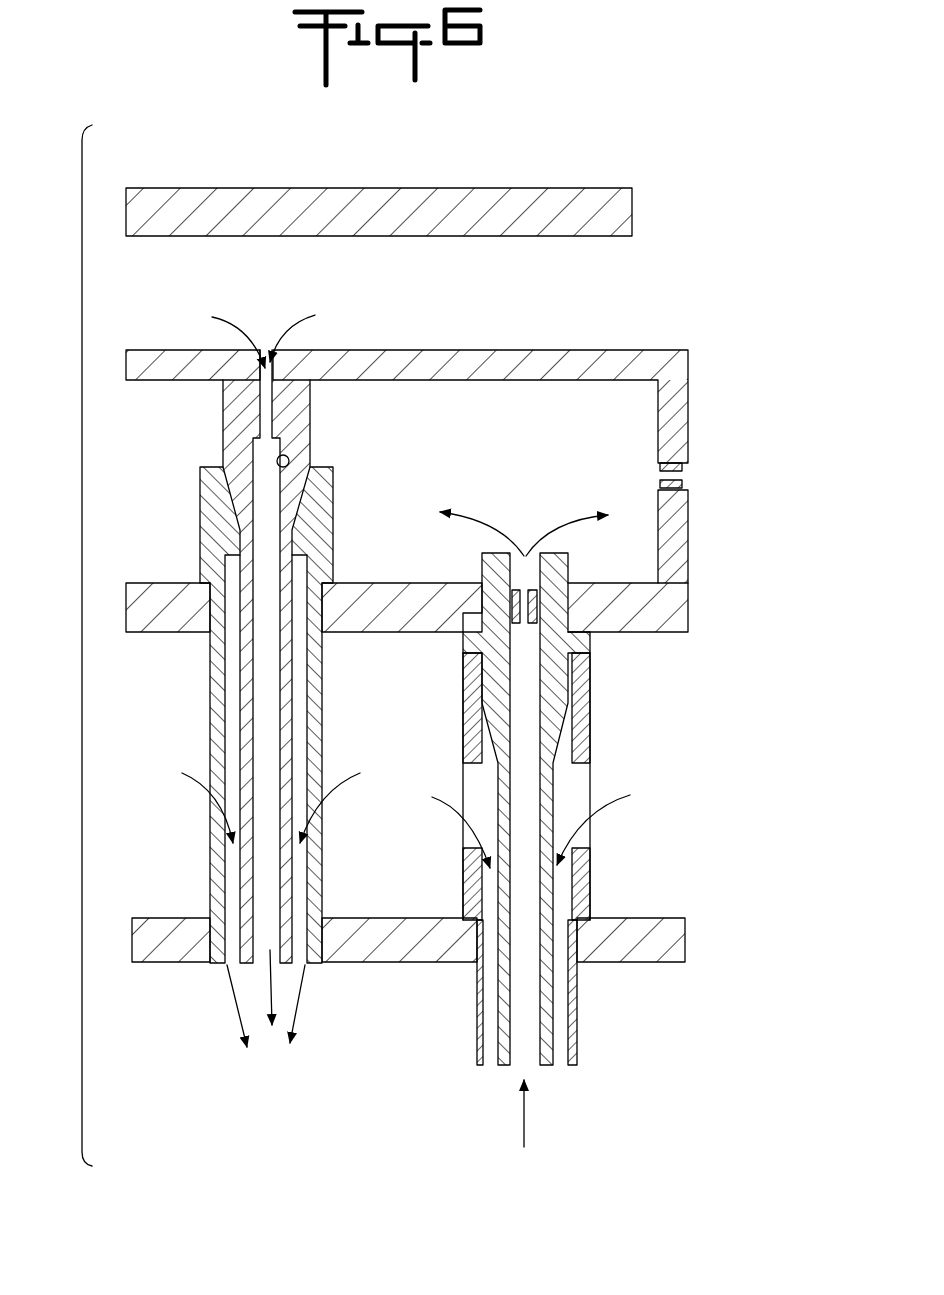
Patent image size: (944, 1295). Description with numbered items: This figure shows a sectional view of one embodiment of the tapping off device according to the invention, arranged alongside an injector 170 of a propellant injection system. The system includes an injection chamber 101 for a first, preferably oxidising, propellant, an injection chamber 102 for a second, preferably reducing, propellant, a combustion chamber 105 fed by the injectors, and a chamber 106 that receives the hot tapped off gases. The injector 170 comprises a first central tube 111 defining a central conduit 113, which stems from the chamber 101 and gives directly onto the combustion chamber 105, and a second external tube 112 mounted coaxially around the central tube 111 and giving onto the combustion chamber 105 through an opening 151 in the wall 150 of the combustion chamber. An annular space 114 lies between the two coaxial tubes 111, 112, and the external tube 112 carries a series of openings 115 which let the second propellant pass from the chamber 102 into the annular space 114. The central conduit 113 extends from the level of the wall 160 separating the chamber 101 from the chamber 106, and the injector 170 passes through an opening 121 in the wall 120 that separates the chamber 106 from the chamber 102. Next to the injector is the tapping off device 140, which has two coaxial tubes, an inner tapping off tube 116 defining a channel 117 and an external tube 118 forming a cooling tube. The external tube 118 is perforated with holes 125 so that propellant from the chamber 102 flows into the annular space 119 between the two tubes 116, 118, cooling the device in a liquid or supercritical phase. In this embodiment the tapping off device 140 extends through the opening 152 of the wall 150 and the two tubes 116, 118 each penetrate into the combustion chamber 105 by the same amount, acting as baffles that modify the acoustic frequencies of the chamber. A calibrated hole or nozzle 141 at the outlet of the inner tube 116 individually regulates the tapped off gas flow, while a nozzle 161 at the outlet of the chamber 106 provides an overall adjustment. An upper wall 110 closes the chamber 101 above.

The injection chamber for a first propellant 101 is at (582, 284).
The injection chamber for a second propellant 102 is at (420, 694).
The combustion chamber 105 is at (452, 1036).
The tapping-off chamber 106 is at (577, 428).
The upper plate 110 is at (216, 208).
The first central tube 111 is at (223, 426).
The second external tube 112 is at (215, 535).
The central conduit 113 is at (289, 458).
The annular space 114 is at (218, 688).
The openings 115 is at (220, 730).
The tapping off tube 116 is at (590, 645).
The channel 117 is at (513, 1050).
The external tube 118 is at (463, 900).
The annular space 119 is at (566, 885).
The wall 120 is at (388, 583).
The opening 121 is at (207, 637).
The holes 125 is at (580, 833).
The tapping off device 140 is at (625, 765).
The calibrated hole 141 is at (590, 672).
The wall of the combustion chamber 150 is at (377, 952).
The opening 151 is at (223, 965).
The opening 152 is at (578, 962).
The wall 160 is at (533, 350).
The nozzle 161 is at (684, 473).
The injector 170 is at (207, 833).